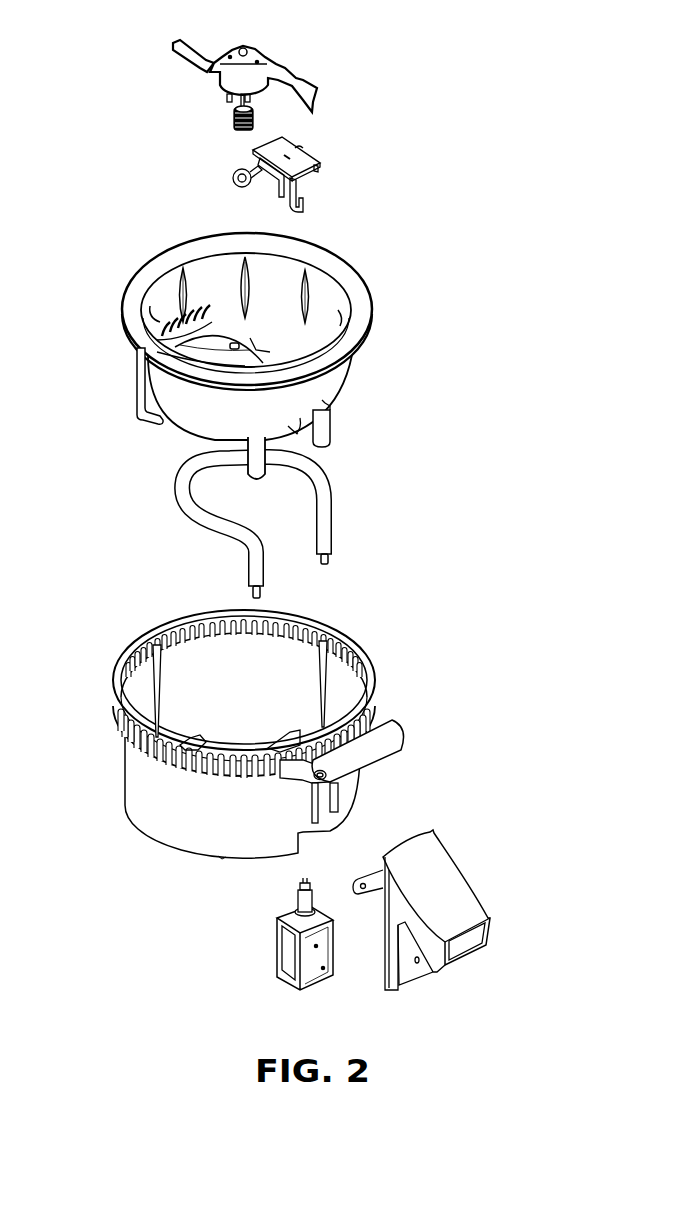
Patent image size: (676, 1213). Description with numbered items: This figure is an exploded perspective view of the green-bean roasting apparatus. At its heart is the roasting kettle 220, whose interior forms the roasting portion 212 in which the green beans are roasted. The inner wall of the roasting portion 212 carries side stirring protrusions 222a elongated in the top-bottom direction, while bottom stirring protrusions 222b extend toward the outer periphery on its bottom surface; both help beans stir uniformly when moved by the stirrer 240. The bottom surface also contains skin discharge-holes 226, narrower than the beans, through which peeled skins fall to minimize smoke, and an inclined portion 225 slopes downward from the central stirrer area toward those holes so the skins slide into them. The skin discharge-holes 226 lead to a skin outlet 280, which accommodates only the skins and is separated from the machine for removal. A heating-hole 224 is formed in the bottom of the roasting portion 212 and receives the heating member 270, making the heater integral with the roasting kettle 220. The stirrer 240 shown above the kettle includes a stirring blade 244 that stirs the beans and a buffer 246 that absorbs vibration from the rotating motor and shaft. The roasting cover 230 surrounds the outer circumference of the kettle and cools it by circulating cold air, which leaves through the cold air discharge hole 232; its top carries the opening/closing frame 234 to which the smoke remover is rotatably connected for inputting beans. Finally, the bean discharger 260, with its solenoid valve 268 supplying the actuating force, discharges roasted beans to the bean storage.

The roasting portion 212 is at (287, 267).
The roasting kettle 220 is at (375, 270).
The side stirring protrusions 222a is at (343, 318).
The bottom stirring protrusions 222b is at (240, 347).
The heating-hole 224 is at (330, 450).
The inclined portion 225 is at (205, 352).
The skin discharge-holes 226 is at (170, 327).
The roasting cover 230 is at (378, 657).
The cold air discharge hole 232 is at (117, 718).
The opening/closing frame 234 is at (402, 724).
The stirrer 240 is at (312, 72).
The stirring blade 244 is at (180, 53).
The buffer 246 is at (236, 130).
The bean discharger 260 is at (322, 146).
The solenoid valve 268 is at (297, 957).
The heating member 270 is at (340, 496).
The skin outlet 280 is at (135, 398).